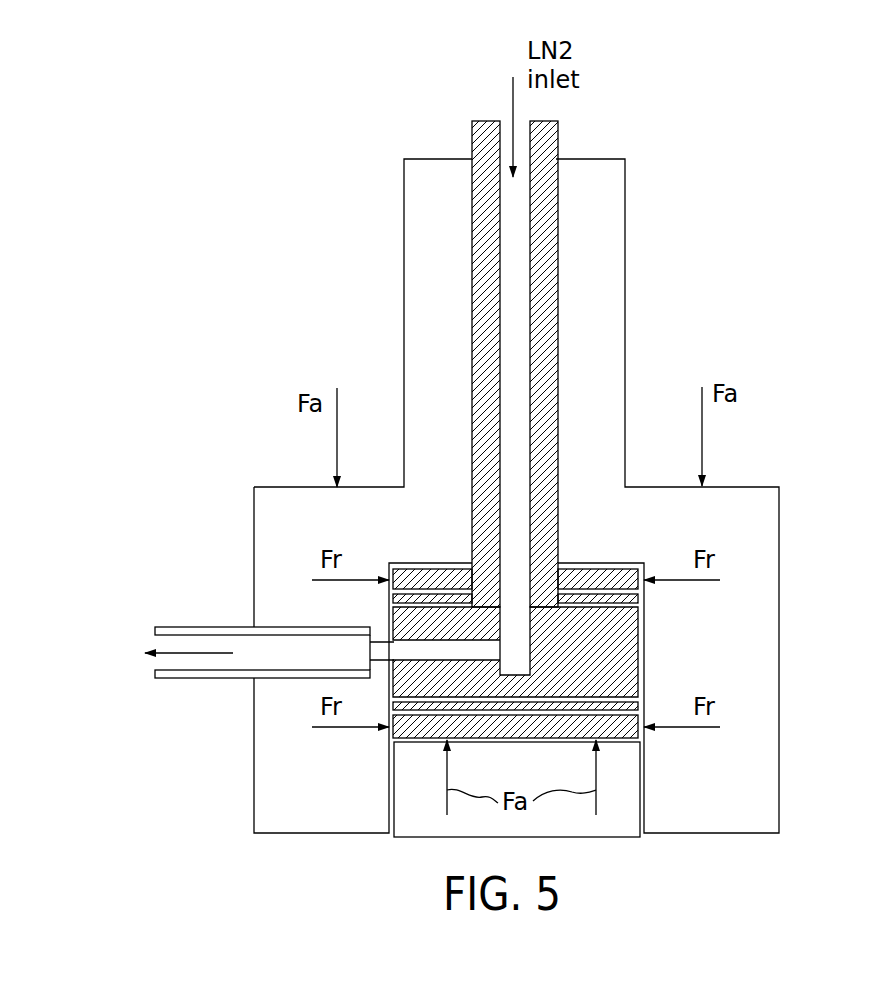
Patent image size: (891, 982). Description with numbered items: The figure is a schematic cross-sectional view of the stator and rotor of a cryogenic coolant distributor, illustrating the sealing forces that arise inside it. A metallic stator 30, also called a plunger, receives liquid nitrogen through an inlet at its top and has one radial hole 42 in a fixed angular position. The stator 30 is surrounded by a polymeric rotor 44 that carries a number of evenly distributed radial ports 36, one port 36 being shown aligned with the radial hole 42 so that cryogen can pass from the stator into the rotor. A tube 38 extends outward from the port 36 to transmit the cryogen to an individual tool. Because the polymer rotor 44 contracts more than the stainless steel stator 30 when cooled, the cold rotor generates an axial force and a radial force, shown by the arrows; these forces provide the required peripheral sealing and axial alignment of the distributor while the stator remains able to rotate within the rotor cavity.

The stator 30 is at (553, 140).
The port 36 is at (293, 652).
The tube 38 is at (212, 627).
The radial hole 42 is at (417, 648).
The rotor 44 is at (780, 563).